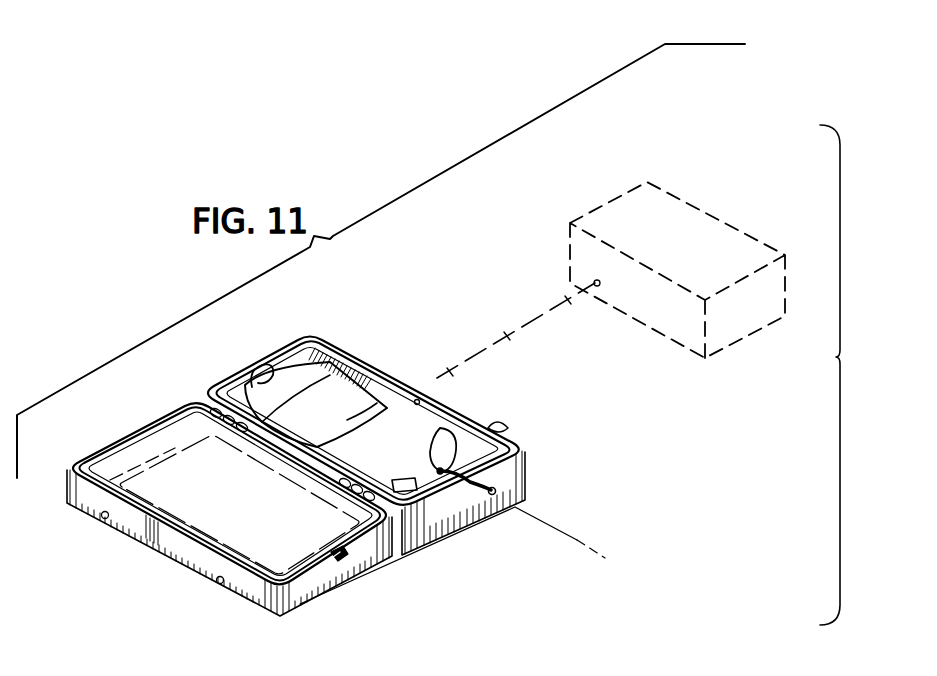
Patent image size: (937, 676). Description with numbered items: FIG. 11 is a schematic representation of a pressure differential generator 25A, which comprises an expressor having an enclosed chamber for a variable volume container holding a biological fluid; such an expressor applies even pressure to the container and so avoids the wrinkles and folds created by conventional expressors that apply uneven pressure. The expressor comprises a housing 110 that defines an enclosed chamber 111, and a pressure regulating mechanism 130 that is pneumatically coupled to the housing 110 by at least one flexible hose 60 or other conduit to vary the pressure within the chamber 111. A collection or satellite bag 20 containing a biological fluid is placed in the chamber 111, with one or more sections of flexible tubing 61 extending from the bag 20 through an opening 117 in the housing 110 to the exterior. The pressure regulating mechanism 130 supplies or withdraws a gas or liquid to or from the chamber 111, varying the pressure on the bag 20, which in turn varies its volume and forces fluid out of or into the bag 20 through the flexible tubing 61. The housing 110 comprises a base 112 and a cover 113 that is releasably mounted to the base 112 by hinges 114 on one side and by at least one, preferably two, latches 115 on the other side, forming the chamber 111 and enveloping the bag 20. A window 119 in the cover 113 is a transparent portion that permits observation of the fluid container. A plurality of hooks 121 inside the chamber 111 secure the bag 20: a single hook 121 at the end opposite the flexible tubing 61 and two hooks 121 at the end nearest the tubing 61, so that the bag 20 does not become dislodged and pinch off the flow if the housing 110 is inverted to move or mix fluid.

The housing 110 is at (543, 466).
The enclosed chamber 111 is at (347, 367).
The base 112 is at (448, 547).
The cover 113 is at (348, 585).
The hinges 114 is at (207, 402).
The latches 115 is at (503, 427).
The opening 117 is at (343, 563).
The window 119 is at (203, 518).
The hooks 121 is at (267, 372).
The collection or satellite bag 20 is at (388, 385).
The flexible hose 60 is at (507, 335).
The flexible tubing 61 is at (482, 493).
The pressure regulating mechanism 130 is at (680, 198).
The pressure differential generator 25A is at (860, 375).